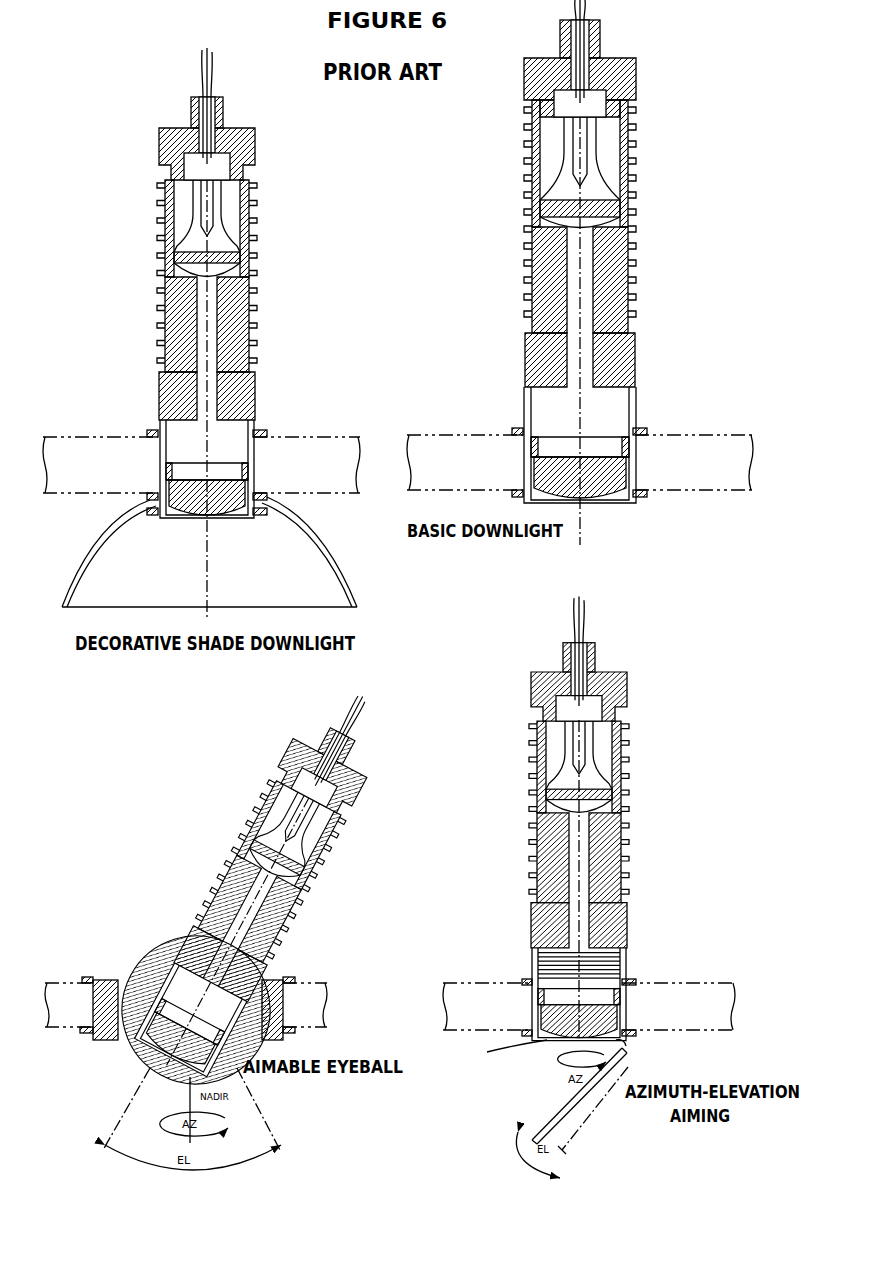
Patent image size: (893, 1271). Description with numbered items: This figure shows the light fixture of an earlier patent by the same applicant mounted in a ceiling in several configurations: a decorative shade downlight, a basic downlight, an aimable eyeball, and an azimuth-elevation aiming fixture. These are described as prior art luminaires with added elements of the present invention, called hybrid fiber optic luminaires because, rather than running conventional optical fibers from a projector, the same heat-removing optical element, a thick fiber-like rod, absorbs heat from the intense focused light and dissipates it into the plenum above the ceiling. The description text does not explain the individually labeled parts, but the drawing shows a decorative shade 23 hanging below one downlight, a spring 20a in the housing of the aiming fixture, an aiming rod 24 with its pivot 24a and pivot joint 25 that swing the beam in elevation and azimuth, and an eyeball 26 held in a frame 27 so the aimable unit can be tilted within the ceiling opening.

The spring 20a is at (600, 975).
The decorative shade 23 is at (330, 552).
The aiming rod 24 is at (595, 1106).
The rod pivot 24a is at (504, 1051).
The pivot joint 25 is at (630, 1043).
The eyeball 26 is at (150, 945).
The eyeball frame 27 is at (113, 980).